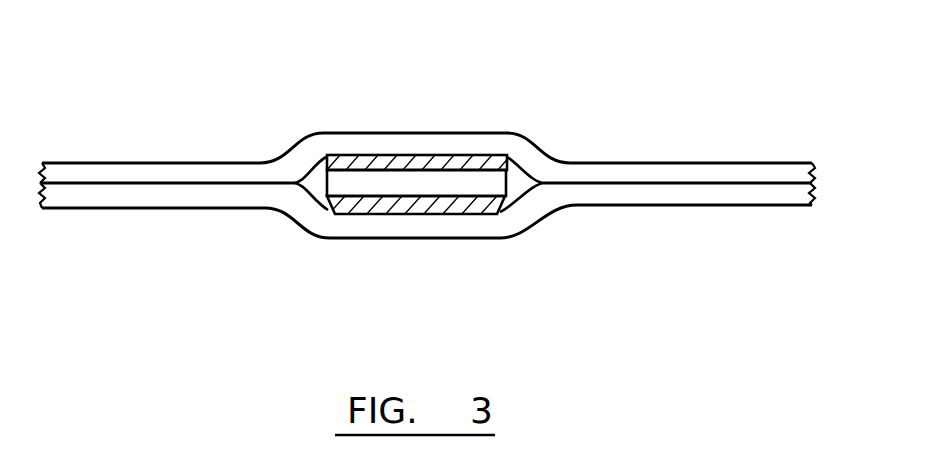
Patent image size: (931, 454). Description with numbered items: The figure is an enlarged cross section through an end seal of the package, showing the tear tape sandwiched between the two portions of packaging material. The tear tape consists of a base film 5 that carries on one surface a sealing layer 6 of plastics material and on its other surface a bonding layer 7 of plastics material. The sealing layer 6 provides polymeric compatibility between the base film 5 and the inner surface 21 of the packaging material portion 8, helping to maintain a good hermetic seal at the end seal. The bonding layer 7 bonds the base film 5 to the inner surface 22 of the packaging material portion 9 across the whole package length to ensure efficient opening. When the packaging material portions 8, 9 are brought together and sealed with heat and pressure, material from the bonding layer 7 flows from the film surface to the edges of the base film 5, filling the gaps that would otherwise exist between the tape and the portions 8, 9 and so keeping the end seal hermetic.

The base film 5 is at (458, 183).
The sealing layer 6 is at (382, 163).
The bonding layer 7 is at (322, 197).
The packaging material portion 8 is at (168, 172).
The packaging material portion 9 is at (162, 195).
The inner surface 21 is at (423, 155).
The inner surface 22 is at (410, 217).